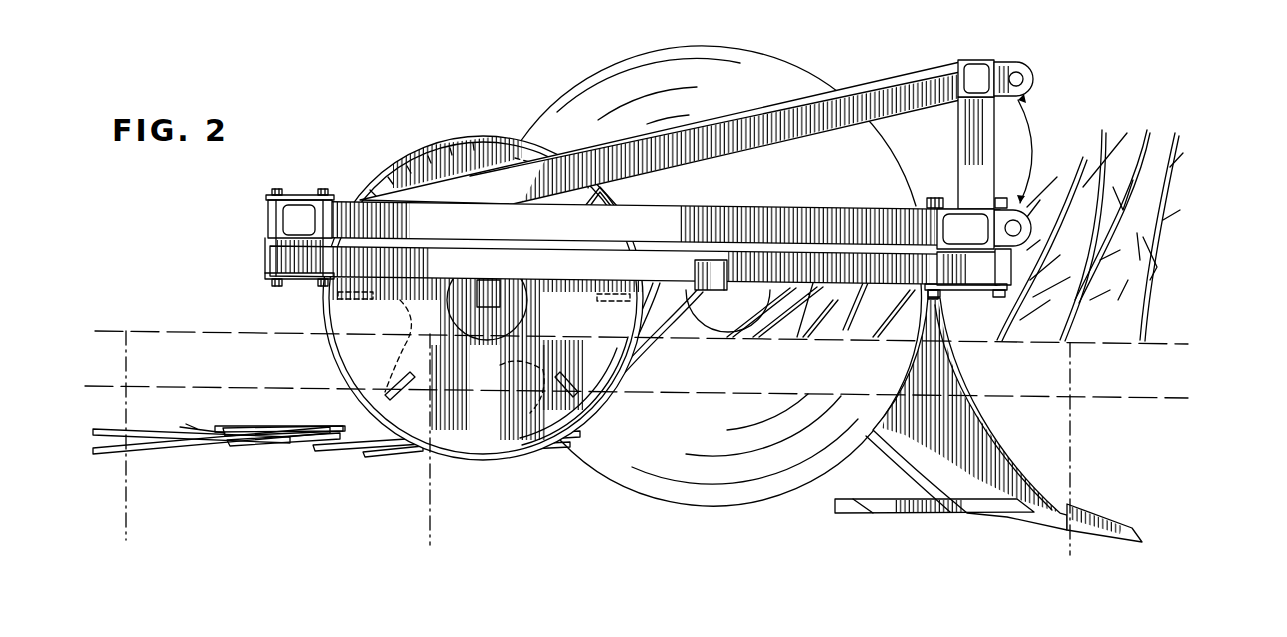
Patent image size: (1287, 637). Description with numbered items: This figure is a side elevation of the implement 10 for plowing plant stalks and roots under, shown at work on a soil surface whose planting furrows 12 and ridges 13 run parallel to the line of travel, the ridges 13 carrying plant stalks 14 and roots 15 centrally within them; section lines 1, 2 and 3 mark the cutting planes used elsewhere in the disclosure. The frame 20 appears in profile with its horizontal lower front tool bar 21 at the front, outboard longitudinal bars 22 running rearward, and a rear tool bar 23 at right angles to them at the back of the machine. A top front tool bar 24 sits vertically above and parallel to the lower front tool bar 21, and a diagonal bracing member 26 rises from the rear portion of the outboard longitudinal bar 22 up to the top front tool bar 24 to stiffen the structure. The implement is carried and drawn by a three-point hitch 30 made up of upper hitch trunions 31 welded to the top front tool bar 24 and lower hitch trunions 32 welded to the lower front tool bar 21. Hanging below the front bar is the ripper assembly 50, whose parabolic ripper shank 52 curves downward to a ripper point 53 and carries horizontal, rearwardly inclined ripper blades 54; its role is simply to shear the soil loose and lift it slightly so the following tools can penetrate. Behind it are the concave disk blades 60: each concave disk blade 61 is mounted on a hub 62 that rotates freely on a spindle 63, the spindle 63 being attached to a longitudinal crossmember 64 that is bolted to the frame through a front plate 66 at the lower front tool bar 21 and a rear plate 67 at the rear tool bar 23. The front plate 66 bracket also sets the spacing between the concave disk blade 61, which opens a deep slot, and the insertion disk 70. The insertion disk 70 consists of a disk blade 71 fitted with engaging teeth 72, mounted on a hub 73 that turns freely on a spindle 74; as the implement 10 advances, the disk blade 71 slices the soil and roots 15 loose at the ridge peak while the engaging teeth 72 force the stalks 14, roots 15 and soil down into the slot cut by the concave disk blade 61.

The section line 1- 1 is at (1063, 541).
The section line 2- 2 is at (432, 528).
The section line 3- 3 is at (128, 526).
The implement for plowing under plant stalks and roots 10 is at (361, 141).
The planting furrows 12 is at (224, 361).
The ridges 13 is at (224, 312).
The plant stalks 14 is at (1164, 121).
The roots 15 is at (307, 442).
The frame 20 is at (1000, 60).
The lower front tool bar 21 is at (948, 222).
The outboard longitudinal bars 22 is at (669, 233).
The rear tool bar 23 is at (298, 221).
The top front tool bar 24 is at (977, 62).
The diagonal bracing members 26 is at (786, 128).
The three-point hitch 30 is at (1027, 148).
The upper hitch trunions 31 is at (1034, 87).
The lower hitch trunions 32 is at (1026, 208).
The ripper assembly 50 is at (1008, 443).
The parabolic ripper shank 52 is at (946, 444).
The ripper point 53 is at (1090, 506).
The ripper blades 54 is at (950, 517).
The concave disk blades 60 is at (772, 57).
The concave disk blade 61 is at (727, 93).
The hub 62 is at (704, 335).
The spindle 63 is at (728, 271).
The longitudinal crossmember 64 is at (669, 271).
The front plate 66 is at (942, 197).
The rear plate 67 is at (305, 196).
The insertion disk 70 is at (484, 130).
The disk blade 71 is at (442, 164).
The engaging teeth 72 is at (400, 340).
The hub 73 is at (530, 302).
The spindle 74 is at (490, 281).